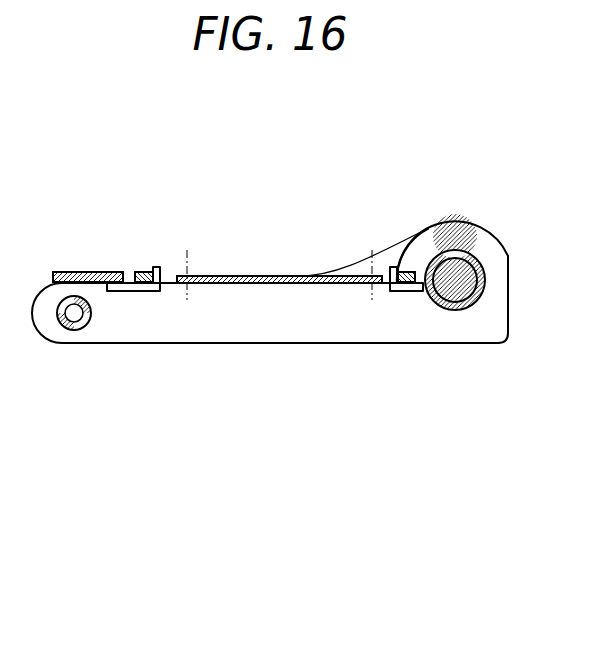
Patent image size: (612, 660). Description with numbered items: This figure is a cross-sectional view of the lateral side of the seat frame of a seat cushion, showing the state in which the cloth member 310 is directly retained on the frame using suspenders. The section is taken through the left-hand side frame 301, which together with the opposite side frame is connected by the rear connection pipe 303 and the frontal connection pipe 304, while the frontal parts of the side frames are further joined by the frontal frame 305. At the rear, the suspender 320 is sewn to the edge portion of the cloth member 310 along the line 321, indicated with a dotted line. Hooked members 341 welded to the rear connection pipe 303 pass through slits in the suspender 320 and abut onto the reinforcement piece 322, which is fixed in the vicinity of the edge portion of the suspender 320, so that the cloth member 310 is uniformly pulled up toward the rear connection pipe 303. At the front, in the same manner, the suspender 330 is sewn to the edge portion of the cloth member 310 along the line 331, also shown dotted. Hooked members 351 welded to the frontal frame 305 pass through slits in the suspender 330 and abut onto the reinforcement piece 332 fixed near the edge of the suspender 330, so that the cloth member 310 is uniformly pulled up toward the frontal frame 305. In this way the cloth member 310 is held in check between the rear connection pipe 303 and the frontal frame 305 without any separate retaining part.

The left-hand side frame 301 is at (272, 330).
The rear connection pipe 303 is at (455, 310).
The frontal connection pipe 304 is at (74, 330).
The frontal frame 305 is at (88, 271).
The cloth member 310 is at (322, 283).
The suspender 320 is at (392, 268).
The line 321 is at (370, 268).
The reinforcement piece 322 is at (410, 268).
The suspender 330 is at (192, 276).
The line 331 is at (196, 283).
The reinforcement piece 332 is at (143, 271).
The hooked members 341 is at (405, 291).
The hooked members 351 is at (137, 291).